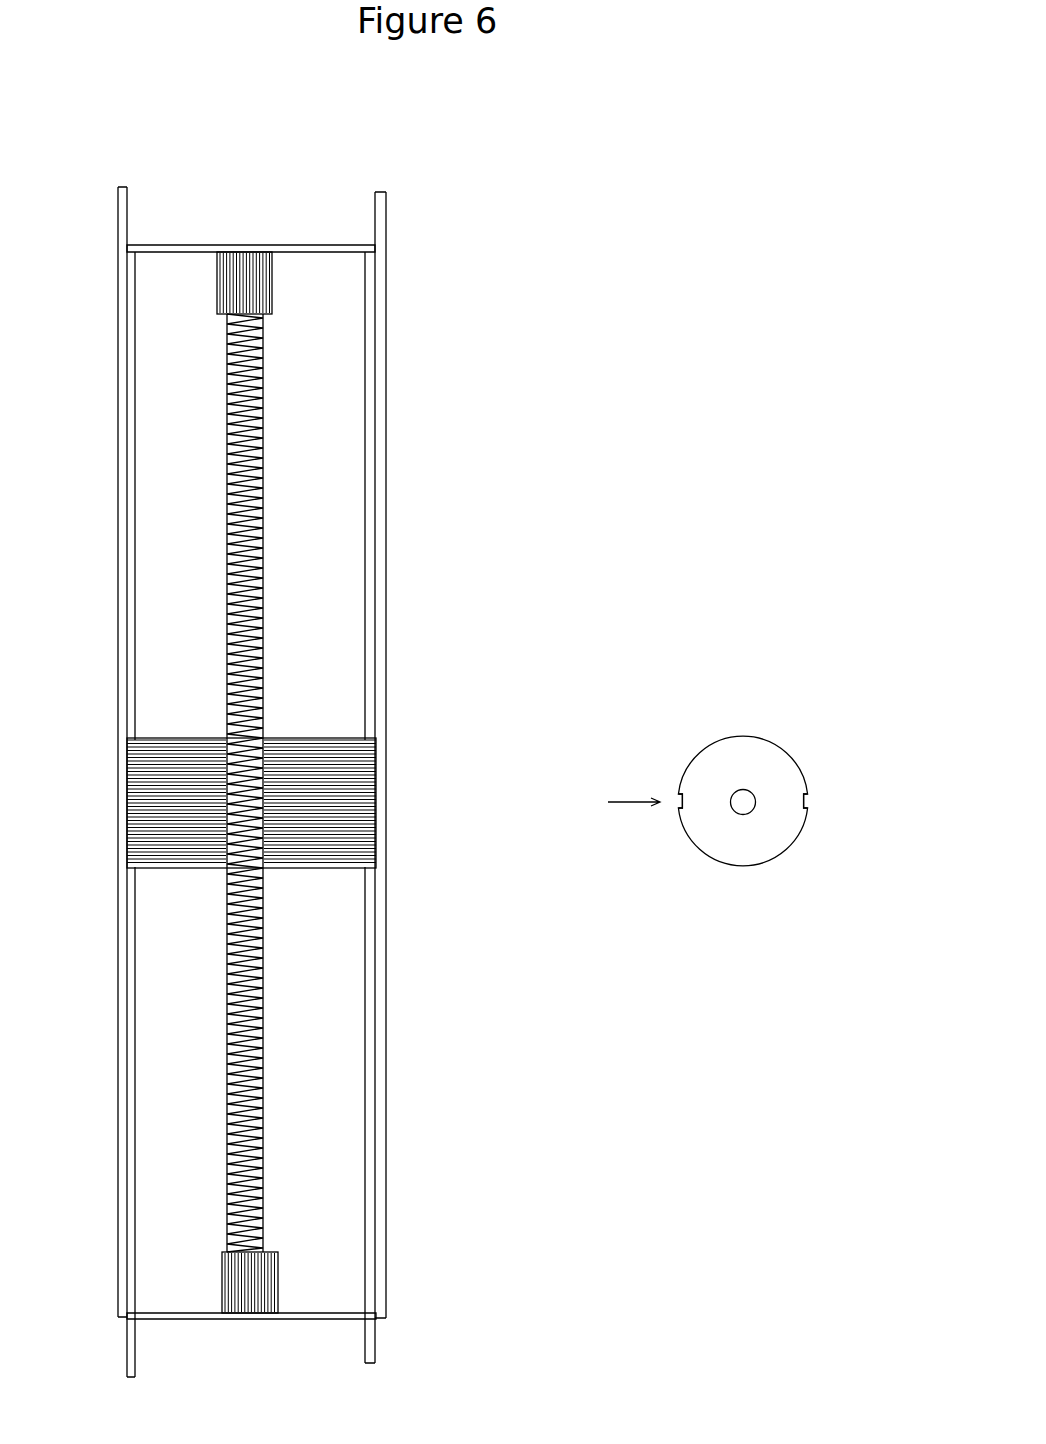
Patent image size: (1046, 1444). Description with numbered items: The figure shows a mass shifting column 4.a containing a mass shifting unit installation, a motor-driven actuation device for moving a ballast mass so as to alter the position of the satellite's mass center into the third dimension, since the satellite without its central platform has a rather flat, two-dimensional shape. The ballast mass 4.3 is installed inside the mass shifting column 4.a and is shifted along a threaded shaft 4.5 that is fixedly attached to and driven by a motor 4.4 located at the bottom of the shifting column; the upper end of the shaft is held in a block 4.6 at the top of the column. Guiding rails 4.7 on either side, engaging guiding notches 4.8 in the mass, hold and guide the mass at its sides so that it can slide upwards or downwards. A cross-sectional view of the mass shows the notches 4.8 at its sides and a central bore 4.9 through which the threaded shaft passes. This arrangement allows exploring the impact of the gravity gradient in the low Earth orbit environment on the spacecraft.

The mass shifting column 4.a is at (251, 709).
The ballast mass 4.3 is at (386, 806).
The motor 4.4 is at (290, 1287).
The threaded spindle 4.5 is at (277, 1029).
The upper bearing block 4.6 is at (282, 276).
The guiding rails 4.7 is at (139, 433).
The guiding notches 4.8 is at (798, 816).
The spindle bore 4.9 is at (749, 775).